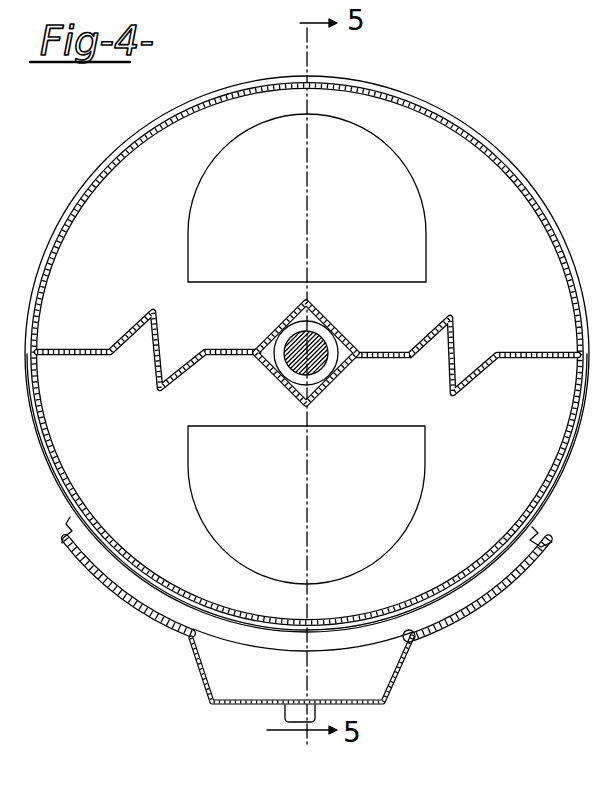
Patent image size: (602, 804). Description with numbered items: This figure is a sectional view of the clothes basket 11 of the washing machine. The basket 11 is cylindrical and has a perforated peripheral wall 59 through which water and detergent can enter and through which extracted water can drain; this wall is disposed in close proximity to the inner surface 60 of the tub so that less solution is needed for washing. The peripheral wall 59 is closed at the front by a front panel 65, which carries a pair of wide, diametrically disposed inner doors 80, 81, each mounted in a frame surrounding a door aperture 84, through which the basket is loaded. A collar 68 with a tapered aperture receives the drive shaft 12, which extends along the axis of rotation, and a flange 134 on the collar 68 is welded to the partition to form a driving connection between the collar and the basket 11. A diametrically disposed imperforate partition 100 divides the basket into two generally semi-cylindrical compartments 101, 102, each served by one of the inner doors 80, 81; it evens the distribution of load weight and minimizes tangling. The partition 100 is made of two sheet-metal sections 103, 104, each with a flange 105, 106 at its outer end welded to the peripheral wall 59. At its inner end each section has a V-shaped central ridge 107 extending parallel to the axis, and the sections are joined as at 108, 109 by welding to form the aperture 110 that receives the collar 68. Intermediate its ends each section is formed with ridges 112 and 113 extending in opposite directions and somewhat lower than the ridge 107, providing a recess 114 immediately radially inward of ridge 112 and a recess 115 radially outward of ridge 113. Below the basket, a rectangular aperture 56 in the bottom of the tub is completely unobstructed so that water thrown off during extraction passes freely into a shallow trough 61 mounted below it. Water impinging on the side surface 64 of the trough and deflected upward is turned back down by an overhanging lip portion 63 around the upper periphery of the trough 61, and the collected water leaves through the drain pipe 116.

The basket 11 is at (388, 88).
The drive shaft 12 is at (293, 367).
The rectangular aperture 56 is at (220, 650).
The perforated peripheral wall 59 is at (68, 493).
The inner surface 60 is at (497, 598).
The trough 61 is at (225, 670).
The overhanging lip portion 63 is at (418, 636).
The side surface 64 is at (390, 668).
The front panel 65 is at (118, 176).
The collar 68 is at (298, 378).
The inner door 80 is at (320, 126).
The inner door 81 is at (414, 482).
The door aperture 84 is at (214, 164).
The partition 100 is at (213, 348).
The compartment 101 is at (484, 163).
The compartment 102 is at (527, 492).
The partition section 103 is at (72, 351).
The partition section 104 is at (518, 361).
The flange 105 is at (44, 341).
The flange 106 is at (573, 366).
The ridge 107 is at (297, 311).
The joint 108 is at (252, 358).
The joint 109 is at (360, 352).
The aperture 110 is at (257, 348).
The ridge 112 is at (158, 390).
The ridge 113 is at (153, 312).
The recess 114 is at (168, 376).
The recess 115 is at (147, 328).
The drain pipe 116 is at (283, 713).
The flange 134 is at (313, 392).